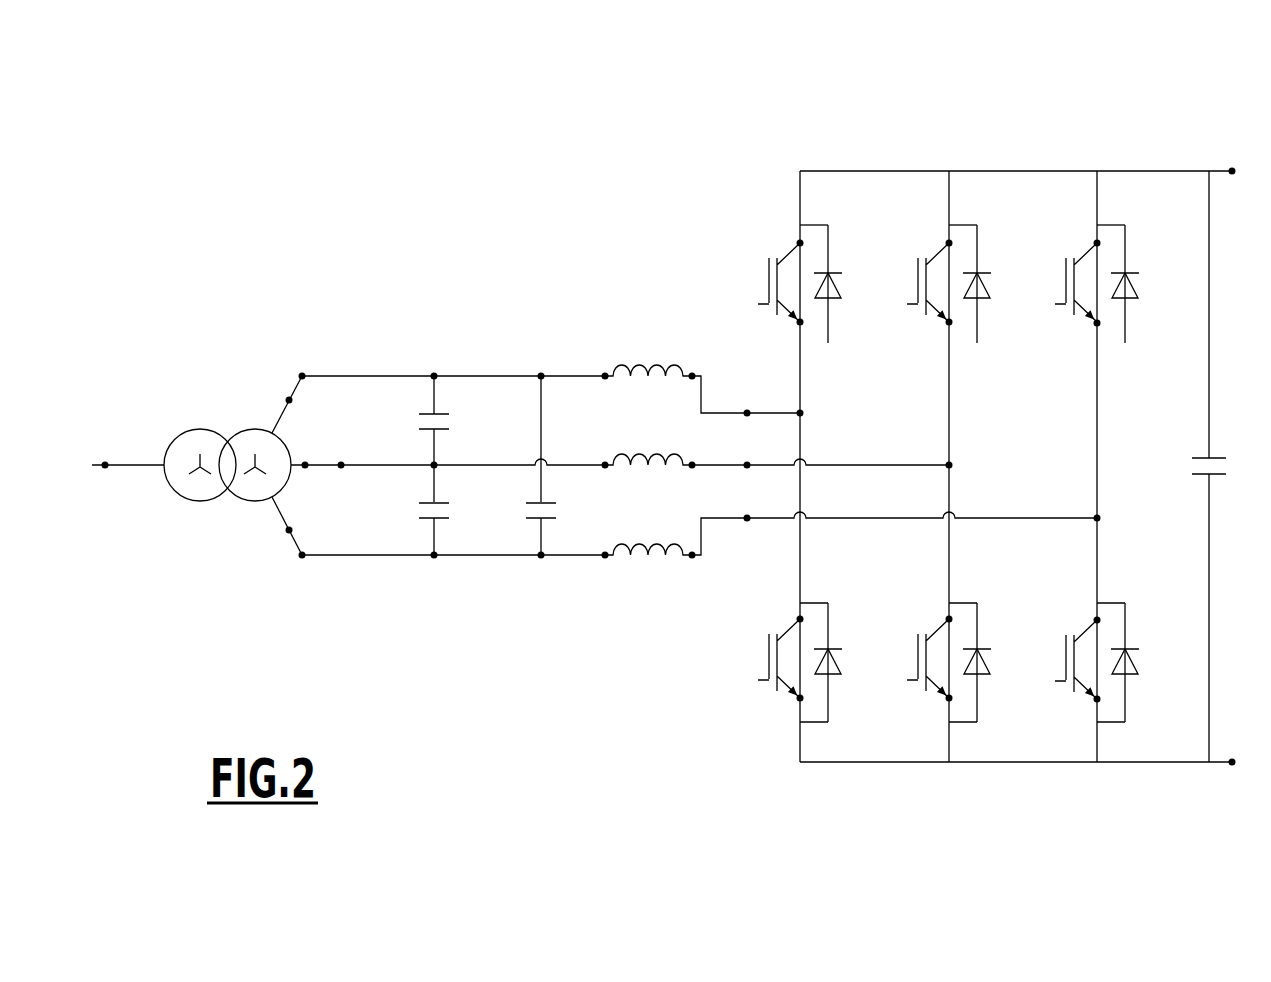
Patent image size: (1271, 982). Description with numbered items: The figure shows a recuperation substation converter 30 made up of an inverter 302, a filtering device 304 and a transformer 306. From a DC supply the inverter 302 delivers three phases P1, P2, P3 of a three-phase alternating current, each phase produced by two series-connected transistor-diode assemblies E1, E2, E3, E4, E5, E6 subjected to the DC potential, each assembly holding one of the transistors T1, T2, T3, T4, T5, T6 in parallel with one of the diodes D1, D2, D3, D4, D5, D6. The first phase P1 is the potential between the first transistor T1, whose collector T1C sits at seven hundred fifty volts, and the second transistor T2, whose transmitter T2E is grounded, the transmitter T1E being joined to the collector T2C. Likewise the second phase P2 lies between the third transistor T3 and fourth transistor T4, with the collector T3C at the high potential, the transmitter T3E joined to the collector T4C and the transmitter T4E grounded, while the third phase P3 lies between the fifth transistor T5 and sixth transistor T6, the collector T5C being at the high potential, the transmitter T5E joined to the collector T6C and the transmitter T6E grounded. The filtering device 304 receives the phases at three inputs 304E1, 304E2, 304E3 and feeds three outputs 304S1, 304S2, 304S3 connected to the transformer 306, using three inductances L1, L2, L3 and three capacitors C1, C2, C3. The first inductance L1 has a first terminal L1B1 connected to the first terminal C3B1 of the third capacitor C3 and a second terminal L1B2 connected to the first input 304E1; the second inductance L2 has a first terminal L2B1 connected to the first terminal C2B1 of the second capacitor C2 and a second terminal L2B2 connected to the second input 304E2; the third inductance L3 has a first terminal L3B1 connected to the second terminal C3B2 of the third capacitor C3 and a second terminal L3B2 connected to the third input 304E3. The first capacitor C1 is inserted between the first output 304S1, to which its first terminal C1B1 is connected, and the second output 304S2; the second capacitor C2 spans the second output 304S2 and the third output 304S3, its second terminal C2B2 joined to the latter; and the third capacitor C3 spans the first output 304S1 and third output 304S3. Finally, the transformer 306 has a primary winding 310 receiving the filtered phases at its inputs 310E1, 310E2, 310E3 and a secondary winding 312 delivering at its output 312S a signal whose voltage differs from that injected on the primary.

The converter 30 is at (1195, 128).
The inverter 302 is at (1026, 160).
The filtering device 304 is at (512, 650).
The transformer 306 is at (227, 485).
The primary winding 310 is at (253, 429).
The secondary winding 312 is at (200, 429).
The output of the secondary winding 312S is at (105, 470).
The first input of the primary winding 310E1 is at (289, 396).
The second input of the primary winding 310E2 is at (305, 462).
The third input of the primary winding 310E3 is at (289, 534).
The first output of the filtering device 304S1 is at (303, 373).
The second output of the filtering device 304S2 is at (341, 468).
The third output of the filtering device 304S3 is at (302, 558).
The first input of the filtering device 304E1 is at (747, 410).
The second input of the filtering device 304E2 is at (747, 468).
The third input of the filtering device 304E3 is at (747, 521).
The first capacitor C1 is at (420, 420).
The second capacitor C2 is at (420, 510).
The third capacitor C3 is at (526, 465).
The first terminal of the first capacitor C1B1 is at (434, 373).
The first terminal of the second capacitor C2B1 is at (436, 463).
The second terminal of the second capacitor C2B2 is at (434, 558).
The first terminal of the third capacitor C3B1 is at (541, 373).
The second terminal of the third capacitor C3B2 is at (541, 558).
The first inductance L1 is at (648, 352).
The second inductance L2 is at (648, 441).
The third inductance L3 is at (648, 529).
The first terminal of the first inductance L1B1 is at (605, 373).
The second terminal of the first inductance L1B2 is at (692, 373).
The first terminal of the second inductance L2B1 is at (605, 462).
The second terminal of the second inductance L2B2 is at (692, 468).
The first terminal of the third inductance L3B1 is at (605, 558).
The second terminal of the third inductance L3B2 is at (692, 558).
The first phase P1 is at (803, 413).
The second phase P2 is at (948, 463).
The third phase P3 is at (1095, 516).
The first transistor T1 is at (757, 268).
The second transistor T2 is at (748, 688).
The third transistor T3 is at (910, 320).
The fourth transistor T4 is at (900, 650).
The fifth transistor T5 is at (1062, 320).
The sixth transistor T6 is at (1145, 632).
The collector of the first transistor T1C is at (798, 243).
The collector of the second transistor T2C is at (798, 619).
The collector of the third transistor T3C is at (947, 243).
The collector of the fourth transistor T4C is at (947, 619).
The collector of the fifth transistor T5C is at (1095, 243).
The collector of the sixth transistor T6C is at (1095, 620).
The transmitter of the first transistor T1E is at (803, 322).
The transmitter of the second transistor T2E is at (800, 701).
The transmitter of the third transistor T3E is at (952, 322).
The transmitter of the fourth transistor T4E is at (949, 701).
The transmitter of the fifth transistor T5E is at (1100, 323).
The transmitter of the sixth transistor T6E is at (1097, 702).
The first diode D1 is at (842, 285).
The second diode D2 is at (830, 690).
The third diode D3 is at (991, 285).
The fourth diode D4 is at (979, 690).
The fifth diode D5 is at (1139, 285).
The sixth diode D6 is at (1127, 690).
The first transistor-diode assembly E1 is at (812, 226).
The second transistor-diode assembly E2 is at (822, 724).
The third transistor-diode assembly E3 is at (960, 226).
The fourth transistor-diode assembly E4 is at (970, 724).
The fifth transistor-diode assembly E5 is at (1110, 226).
The sixth transistor-diode assembly E6 is at (1120, 724).